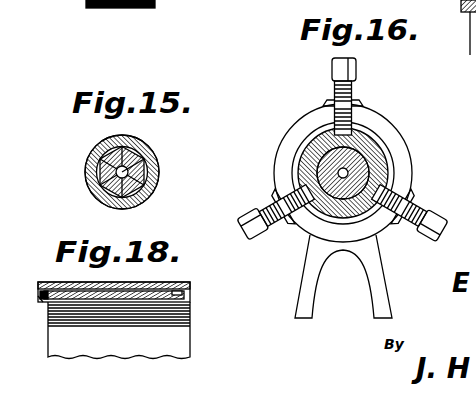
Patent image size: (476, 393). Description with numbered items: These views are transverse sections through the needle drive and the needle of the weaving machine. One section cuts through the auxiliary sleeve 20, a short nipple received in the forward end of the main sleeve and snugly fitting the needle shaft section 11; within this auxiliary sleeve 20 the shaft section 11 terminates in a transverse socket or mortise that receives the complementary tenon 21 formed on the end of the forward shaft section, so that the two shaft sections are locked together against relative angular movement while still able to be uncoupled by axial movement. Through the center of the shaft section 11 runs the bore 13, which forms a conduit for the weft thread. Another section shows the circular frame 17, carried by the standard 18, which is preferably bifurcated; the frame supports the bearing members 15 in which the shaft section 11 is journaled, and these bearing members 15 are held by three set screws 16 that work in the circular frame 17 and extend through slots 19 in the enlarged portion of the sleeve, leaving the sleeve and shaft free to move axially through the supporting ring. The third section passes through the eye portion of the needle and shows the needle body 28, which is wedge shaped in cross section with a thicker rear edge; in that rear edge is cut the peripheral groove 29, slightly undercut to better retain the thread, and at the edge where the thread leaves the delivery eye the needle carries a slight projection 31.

In FIG. 15, the needle shaft section 11 is at (158, 177).
In FIG. 16, the needle shaft section 11 is at (363, 160).
In FIG. 15, the bore 13 is at (150, 158).
In FIG. 16, the bore 13 is at (340, 172).
In FIG. 16, the bearing members 15 is at (313, 136).
In FIG. 16, the set screws 16 is at (353, 93).
In FIG. 16, the circular frame 17 is at (375, 123).
In FIG. 16, the standard 18 is at (310, 295).
In FIG. 16, the slots 19 is at (384, 184).
In FIG. 15, the auxiliary sleeve 20 is at (142, 193).
In FIG. 15, the tenon 21 is at (108, 152).
In FIG. 18, the needle body 28 is at (192, 330).
In FIG. 18, the peripheral groove 29 is at (185, 291).
In FIG. 18, the projection 31 is at (40, 288).